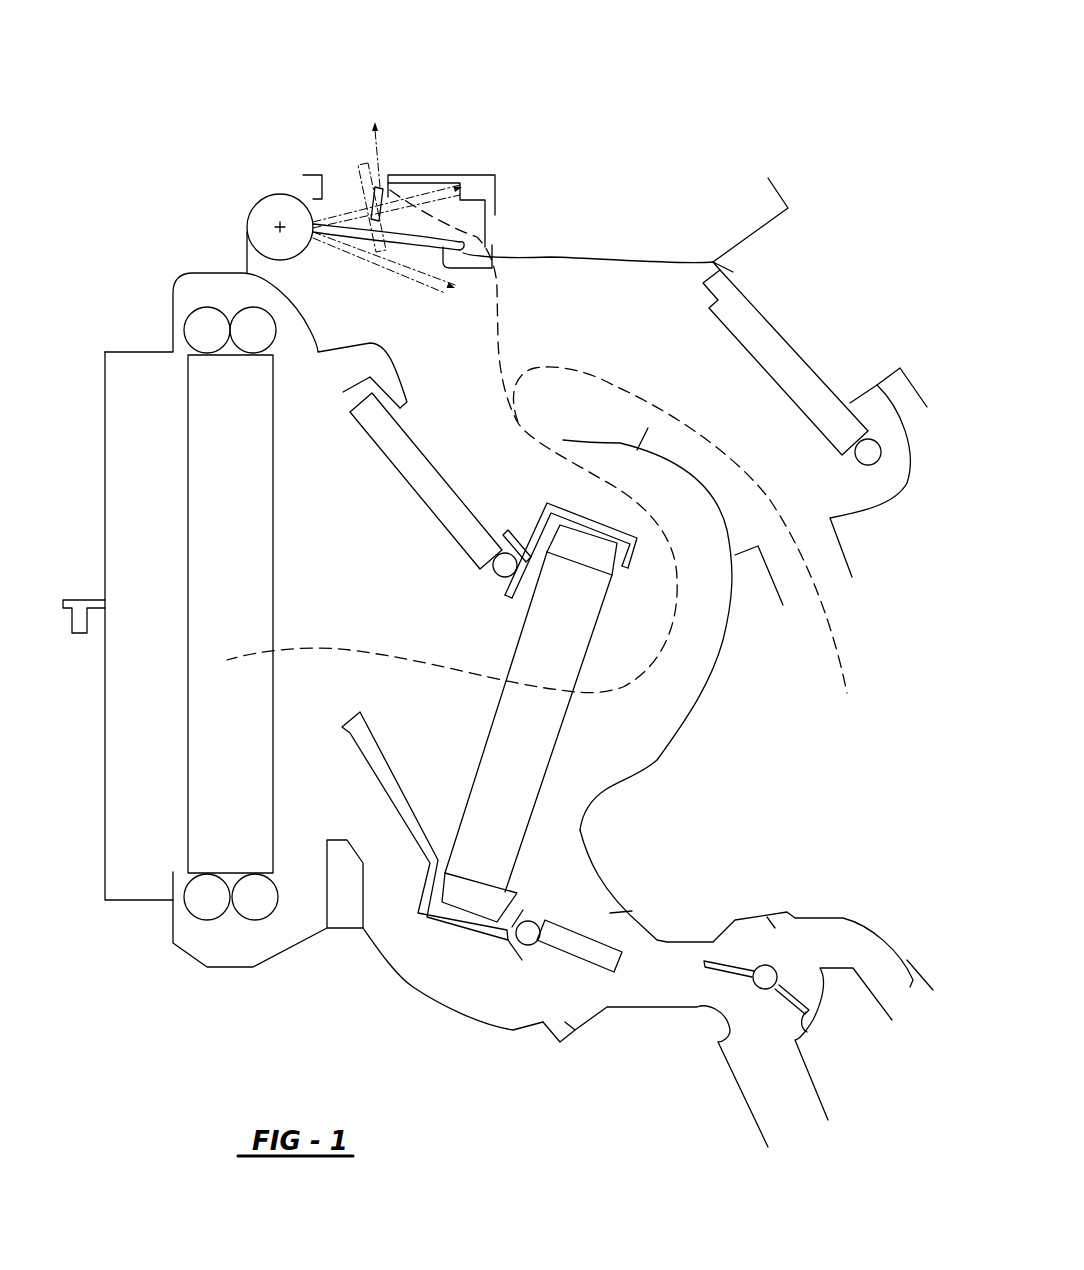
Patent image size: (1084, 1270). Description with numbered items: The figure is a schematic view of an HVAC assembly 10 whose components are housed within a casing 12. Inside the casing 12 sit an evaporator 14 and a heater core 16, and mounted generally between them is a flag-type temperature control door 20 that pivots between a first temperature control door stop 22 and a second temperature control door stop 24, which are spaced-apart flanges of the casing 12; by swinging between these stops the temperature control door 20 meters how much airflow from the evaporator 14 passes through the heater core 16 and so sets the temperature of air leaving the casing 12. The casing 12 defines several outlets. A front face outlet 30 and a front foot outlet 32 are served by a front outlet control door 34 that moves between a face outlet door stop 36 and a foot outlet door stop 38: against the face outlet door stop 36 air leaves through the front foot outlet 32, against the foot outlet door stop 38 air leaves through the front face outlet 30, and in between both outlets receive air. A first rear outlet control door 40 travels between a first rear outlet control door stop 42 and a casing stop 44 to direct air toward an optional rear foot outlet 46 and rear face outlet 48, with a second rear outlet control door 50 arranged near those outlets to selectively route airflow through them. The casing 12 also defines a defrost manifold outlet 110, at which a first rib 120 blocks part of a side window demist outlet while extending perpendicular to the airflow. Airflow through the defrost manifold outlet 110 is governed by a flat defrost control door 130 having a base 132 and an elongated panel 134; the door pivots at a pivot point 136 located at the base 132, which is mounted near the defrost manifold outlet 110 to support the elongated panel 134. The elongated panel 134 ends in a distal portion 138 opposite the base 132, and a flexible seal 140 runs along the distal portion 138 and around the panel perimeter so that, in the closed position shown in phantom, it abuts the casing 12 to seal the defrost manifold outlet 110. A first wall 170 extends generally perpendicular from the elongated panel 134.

The HVAC assembly 10 is at (170, 106).
The casing 12 is at (105, 370).
The evaporator 14 is at (227, 790).
The heater core 16 is at (503, 775).
The temperature control door 20 is at (405, 465).
The first temperature control door stop 22 is at (353, 748).
The second temperature control door stop 24 is at (343, 392).
The front face outlet 30 is at (783, 217).
The front foot outlet 32 is at (852, 577).
The front outlet control door 34 is at (758, 347).
The face outlet door stop 36 is at (716, 263).
The foot outlet door stop 38 is at (640, 437).
The first rear outlet control door 40 is at (603, 958).
The first rear outlet control door stop 42 is at (633, 913).
The casing stop 44 is at (575, 1030).
The rear foot outlet 46 is at (910, 985).
The rear face outlet 48 is at (762, 1127).
The second rear outlet control door 50 is at (807, 1027).
The defrost manifold outlet 110 is at (390, 167).
The first rib 120 is at (420, 177).
The defrost control door 130 is at (412, 255).
The base 132 is at (249, 228).
The elongated panel 134 is at (493, 260).
The pivot point 136 is at (273, 224).
The distal portion 138 is at (463, 250).
The flexible seal 140 is at (463, 240).
The first wall 170 is at (378, 187).